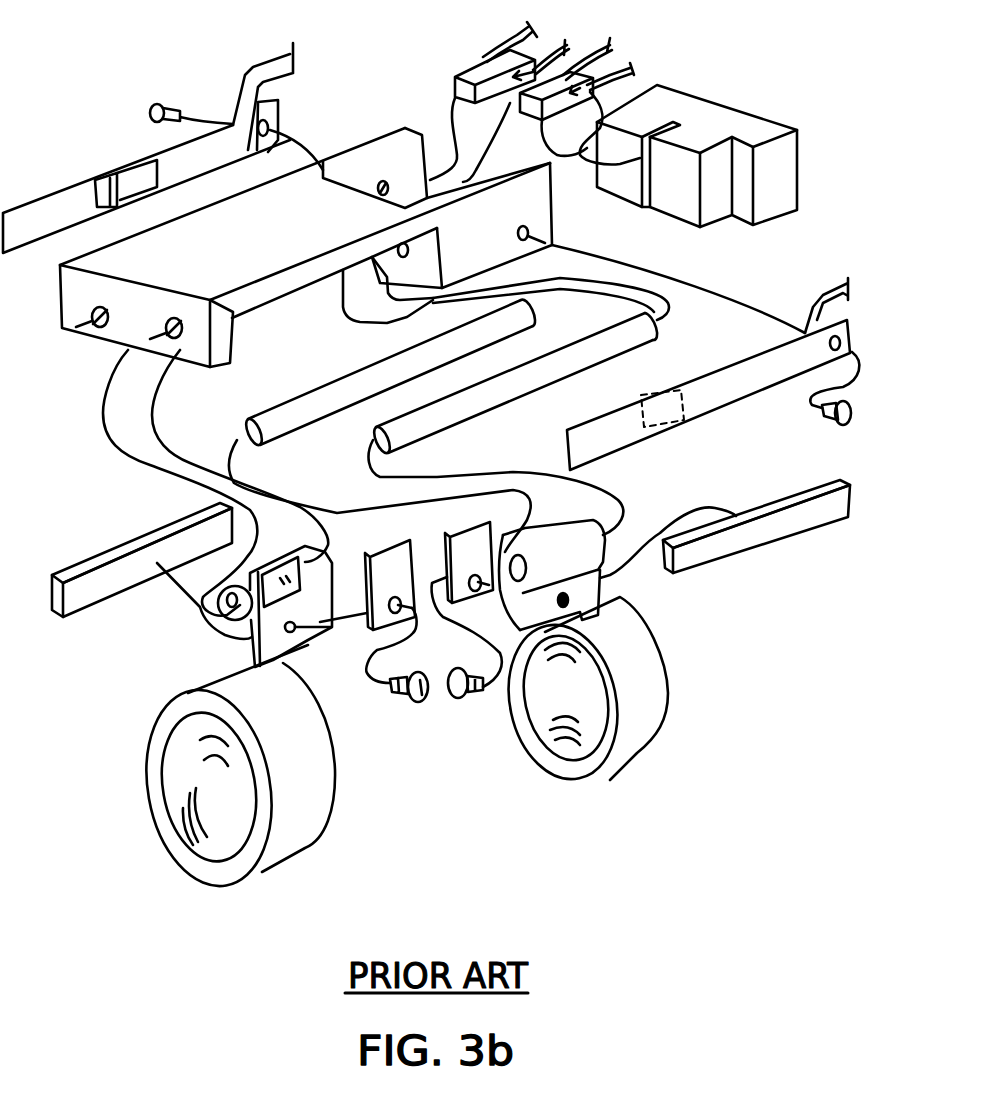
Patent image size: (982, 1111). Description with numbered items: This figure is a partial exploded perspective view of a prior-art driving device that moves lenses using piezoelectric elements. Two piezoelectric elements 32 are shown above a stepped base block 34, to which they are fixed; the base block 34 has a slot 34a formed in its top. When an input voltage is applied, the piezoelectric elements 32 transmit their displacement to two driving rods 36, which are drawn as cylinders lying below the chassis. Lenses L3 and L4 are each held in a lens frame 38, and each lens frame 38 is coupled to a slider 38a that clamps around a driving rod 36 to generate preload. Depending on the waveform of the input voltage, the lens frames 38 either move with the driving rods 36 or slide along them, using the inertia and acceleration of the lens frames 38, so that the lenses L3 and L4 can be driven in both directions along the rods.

The piezoelectric element 32 is at (472, 72).
The base block 34 is at (733, 120).
The slot of block 34a is at (657, 125).
The driving rod 36 is at (284, 417).
The slider 38a is at (247, 655).
The lens frame 38 is at (312, 807).
The lens L3 is at (190, 840).
The lens L4 is at (560, 752).